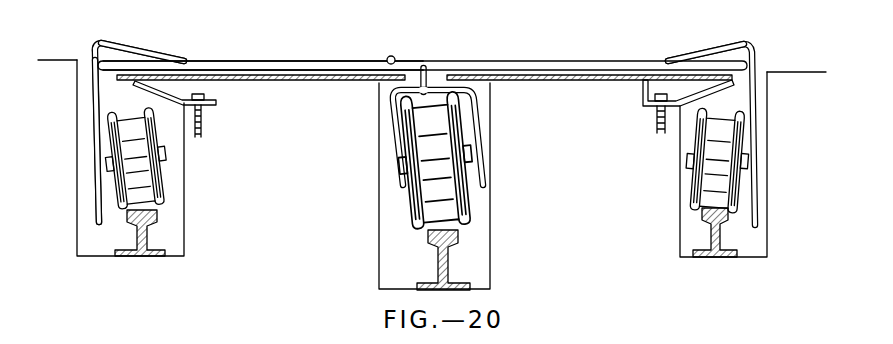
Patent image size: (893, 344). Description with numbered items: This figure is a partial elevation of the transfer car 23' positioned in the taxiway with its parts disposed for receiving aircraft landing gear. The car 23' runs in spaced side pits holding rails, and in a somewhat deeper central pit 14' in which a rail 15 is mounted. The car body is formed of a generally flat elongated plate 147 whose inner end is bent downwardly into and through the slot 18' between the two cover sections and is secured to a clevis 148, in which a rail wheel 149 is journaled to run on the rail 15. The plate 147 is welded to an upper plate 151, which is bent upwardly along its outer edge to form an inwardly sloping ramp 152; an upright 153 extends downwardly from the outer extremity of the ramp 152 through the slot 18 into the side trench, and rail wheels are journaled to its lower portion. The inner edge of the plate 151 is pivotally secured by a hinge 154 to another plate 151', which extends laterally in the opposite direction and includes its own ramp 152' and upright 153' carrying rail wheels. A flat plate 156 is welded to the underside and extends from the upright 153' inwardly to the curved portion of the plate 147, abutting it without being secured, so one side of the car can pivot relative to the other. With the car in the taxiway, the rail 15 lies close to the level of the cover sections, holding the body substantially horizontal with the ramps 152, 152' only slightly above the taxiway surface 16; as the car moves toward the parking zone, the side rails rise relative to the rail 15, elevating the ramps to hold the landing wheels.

The pit 14' is at (455, 186).
The rail 15 is at (458, 239).
The taxiway surface 16 is at (800, 76).
The slot 18 is at (136, 116).
The slot 18' is at (446, 57).
The car 23' is at (366, 35).
The plate 147 is at (245, 66).
The clevis 148 is at (430, 84).
The rail wheel 149 is at (448, 173).
The upper plate 151 is at (260, 46).
The plate 151' is at (585, 47).
The ramp 152 is at (142, 40).
The ramp 152' is at (712, 37).
The upright 153 is at (68, 127).
The upright 153' is at (745, 131).
The hinge 154 is at (392, 55).
The plate 156 is at (642, 72).